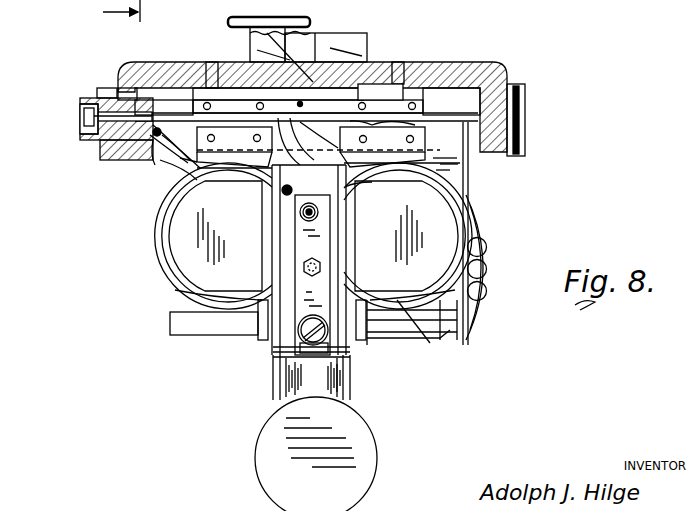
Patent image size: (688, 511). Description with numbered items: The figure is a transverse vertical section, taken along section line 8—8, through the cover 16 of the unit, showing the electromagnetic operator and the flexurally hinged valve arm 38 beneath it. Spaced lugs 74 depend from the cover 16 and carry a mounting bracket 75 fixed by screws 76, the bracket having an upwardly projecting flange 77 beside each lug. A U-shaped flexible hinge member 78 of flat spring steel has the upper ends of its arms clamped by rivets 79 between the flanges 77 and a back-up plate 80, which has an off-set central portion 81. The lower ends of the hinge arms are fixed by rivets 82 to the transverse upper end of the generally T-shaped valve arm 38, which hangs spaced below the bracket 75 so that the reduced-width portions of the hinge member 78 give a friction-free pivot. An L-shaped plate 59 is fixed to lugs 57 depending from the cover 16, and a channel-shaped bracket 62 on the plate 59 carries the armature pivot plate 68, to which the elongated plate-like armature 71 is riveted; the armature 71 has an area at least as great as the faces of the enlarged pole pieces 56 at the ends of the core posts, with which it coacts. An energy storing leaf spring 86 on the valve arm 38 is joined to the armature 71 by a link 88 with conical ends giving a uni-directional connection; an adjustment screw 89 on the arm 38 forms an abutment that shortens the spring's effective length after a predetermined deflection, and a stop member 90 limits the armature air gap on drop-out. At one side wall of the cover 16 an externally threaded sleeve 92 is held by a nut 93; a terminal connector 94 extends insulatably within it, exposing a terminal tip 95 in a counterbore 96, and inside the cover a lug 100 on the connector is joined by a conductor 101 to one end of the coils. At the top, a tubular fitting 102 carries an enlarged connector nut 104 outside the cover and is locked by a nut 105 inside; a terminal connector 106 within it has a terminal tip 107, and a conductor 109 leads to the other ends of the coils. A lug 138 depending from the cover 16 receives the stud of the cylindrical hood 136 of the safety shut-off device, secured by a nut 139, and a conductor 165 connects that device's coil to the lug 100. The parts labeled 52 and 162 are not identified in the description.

The section line 8 is at (116, 11).
The cover 16 is at (455, 62).
The valve arm 38 is at (332, 383).
The bracket 52 is at (407, 345).
The pole pieces 56 is at (200, 294).
The lugs 57 is at (166, 193).
The L-shaped plate 59 is at (175, 289).
The channel-shaped bracket 62 is at (258, 323).
The armature pivot plate 68 is at (268, 342).
The armature 71 is at (260, 274).
The depending lugs 74 is at (212, 62).
The mounting bracket 75 is at (289, 188).
The screws 76 is at (255, 139).
The upwardly projecting flange 77 is at (193, 103).
The flexible hinge member 78 is at (415, 125).
The rivets 79 is at (256, 107).
The back-up plate 80 is at (221, 101).
The off-set central portion 81 is at (314, 366).
The rivets 82 is at (258, 143).
The energy storing leaf spring 86 is at (325, 243).
The link 88 is at (318, 212).
The adjustment screw 89 is at (303, 264).
The stop member 90 is at (301, 211).
The externally threaded sleeve 92 is at (88, 100).
The nut 93 is at (107, 88).
The terminal connector 94 is at (158, 130).
The terminal tip 95 is at (82, 117).
The counterbore 96 is at (84, 124).
The lug 100 is at (150, 166).
The conductor 101 is at (170, 156).
The tubular fitting 102 is at (285, 46).
The connector nut 104 is at (292, 37).
The nut 105 is at (330, 68).
The terminal connector 106 is at (300, 55).
The terminal tip 107 is at (362, 56).
The conductor 109 is at (298, 150).
The cylindrical hood 136 is at (432, 325).
The lug 138 is at (473, 306).
The nut 139 is at (478, 268).
The knob 162 is at (310, 17).
The conductor 165 is at (168, 170).